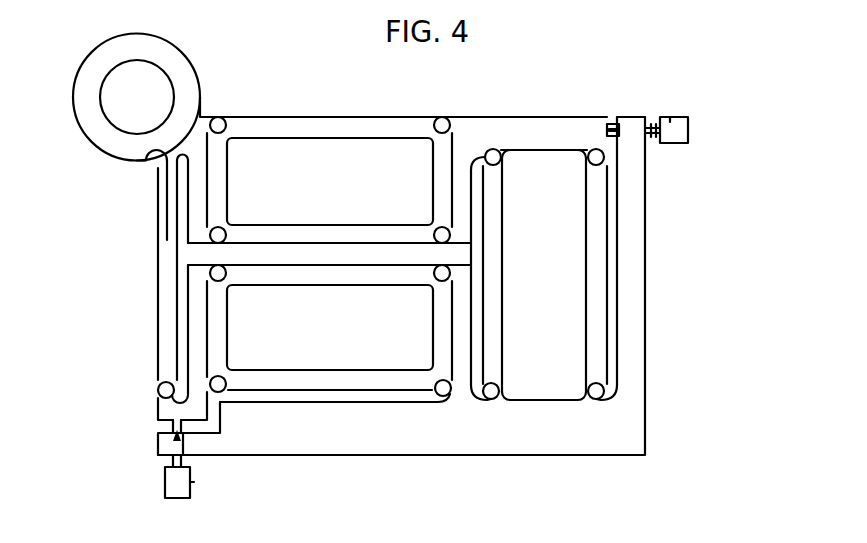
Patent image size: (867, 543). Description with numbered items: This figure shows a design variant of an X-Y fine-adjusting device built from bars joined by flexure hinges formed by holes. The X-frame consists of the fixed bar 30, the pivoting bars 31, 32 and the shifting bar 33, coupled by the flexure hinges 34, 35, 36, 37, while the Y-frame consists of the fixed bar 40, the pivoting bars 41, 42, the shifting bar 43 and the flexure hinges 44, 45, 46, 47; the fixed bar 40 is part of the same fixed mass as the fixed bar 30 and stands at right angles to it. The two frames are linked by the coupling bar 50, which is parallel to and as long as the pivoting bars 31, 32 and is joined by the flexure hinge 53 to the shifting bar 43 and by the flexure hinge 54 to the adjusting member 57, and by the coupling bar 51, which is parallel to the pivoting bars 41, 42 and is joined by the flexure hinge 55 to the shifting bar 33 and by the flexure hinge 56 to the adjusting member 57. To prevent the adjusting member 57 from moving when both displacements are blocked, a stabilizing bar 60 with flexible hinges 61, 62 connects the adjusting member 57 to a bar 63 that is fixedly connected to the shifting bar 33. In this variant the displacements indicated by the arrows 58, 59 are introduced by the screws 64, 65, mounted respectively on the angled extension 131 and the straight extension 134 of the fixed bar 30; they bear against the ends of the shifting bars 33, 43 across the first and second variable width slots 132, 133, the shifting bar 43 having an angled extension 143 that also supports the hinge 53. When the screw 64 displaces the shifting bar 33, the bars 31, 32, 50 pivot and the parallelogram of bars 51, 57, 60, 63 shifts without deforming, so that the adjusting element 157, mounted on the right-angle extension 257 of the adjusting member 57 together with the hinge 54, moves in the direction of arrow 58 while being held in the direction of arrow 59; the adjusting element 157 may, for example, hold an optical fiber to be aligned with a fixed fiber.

The fixed bar 30 is at (543, 456).
The pivoting bar 31 is at (497, 264).
The pivoting bar 32 is at (600, 263).
The shifting bar 33 is at (531, 130).
The flexure hinge 34 is at (493, 400).
The flexure hinge 35 is at (596, 400).
The flexure hinge 36 is at (492, 149).
The flexure hinge 37 is at (597, 149).
The fixed bar 40 is at (460, 340).
The pivoting bar 41 is at (338, 382).
The pivoting bar 42 is at (337, 260).
The shifting bar 43 is at (197, 323).
The flexure hinge 44 is at (445, 397).
The flexure hinge 45 is at (442, 283).
The flexure hinge 46 is at (211, 378).
The flexure hinge 47 is at (209, 271).
The coupling bar 50 is at (163, 258).
The coupling bar 51 is at (303, 128).
The flexure hinge 53 is at (156, 388).
The flexure hinge 54 is at (164, 160).
The flexure hinge 55 is at (443, 118).
The flexure hinge 56 is at (221, 117).
The adjusting member 57 is at (195, 208).
The arrow 58 is at (688, 130).
The arrow 59 is at (177, 441).
The stabilizing bar 60 is at (290, 232).
The flexible hinge 61 is at (441, 229).
The flexible hinge 62 is at (219, 229).
The bar 63 is at (460, 172).
The screw 64 is at (671, 117).
The screw 65 is at (194, 482).
The angled extension 131 is at (640, 325).
The variable width slot 132 is at (613, 122).
The variable width slot 133 is at (160, 430).
The straight extension 134 is at (160, 450).
The angled extension 143 is at (160, 413).
The adjusting element 157 is at (105, 131).
The right-angle extension 257 is at (186, 131).